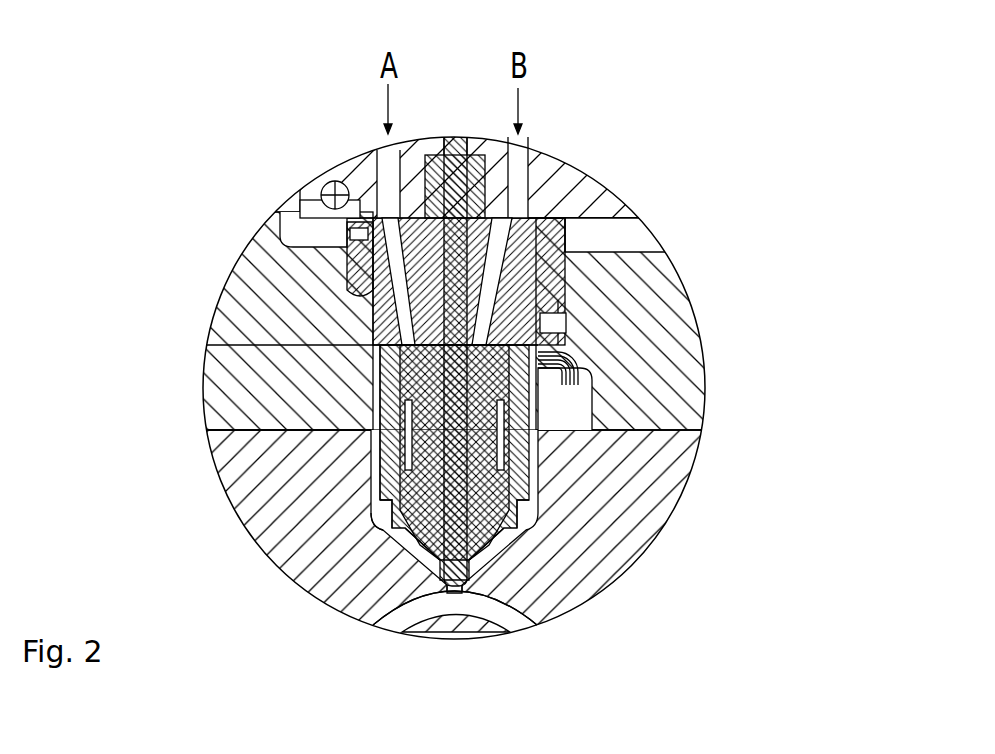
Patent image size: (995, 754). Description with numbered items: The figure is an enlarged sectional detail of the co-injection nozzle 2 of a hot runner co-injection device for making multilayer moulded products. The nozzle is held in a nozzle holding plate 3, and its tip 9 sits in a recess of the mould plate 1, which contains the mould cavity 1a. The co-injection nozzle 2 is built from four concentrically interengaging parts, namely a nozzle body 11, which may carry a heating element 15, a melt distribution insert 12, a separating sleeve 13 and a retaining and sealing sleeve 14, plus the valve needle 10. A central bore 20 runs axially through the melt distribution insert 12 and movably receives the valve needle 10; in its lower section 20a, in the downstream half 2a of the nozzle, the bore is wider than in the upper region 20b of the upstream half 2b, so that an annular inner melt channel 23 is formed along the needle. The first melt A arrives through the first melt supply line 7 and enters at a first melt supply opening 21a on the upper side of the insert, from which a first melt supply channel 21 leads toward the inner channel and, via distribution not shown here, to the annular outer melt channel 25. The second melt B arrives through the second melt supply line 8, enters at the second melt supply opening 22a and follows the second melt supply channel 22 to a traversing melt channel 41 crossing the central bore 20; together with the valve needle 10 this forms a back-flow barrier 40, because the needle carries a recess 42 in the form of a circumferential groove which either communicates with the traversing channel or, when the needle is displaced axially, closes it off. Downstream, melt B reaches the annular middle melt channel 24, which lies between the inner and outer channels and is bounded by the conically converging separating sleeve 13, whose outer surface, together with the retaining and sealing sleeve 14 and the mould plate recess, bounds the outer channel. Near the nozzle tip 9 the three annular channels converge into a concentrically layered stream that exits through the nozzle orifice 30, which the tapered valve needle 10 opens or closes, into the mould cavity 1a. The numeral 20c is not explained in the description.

The mould plate 1 is at (683, 457).
The mould cavity 1a is at (400, 625).
The co-injection nozzle 2 is at (345, 400).
The downstream half of the co-injection nozzle 2a is at (318, 470).
The upstream half of the co-injection nozzle 2b is at (330, 313).
The nozzle holding plate 3 is at (693, 400).
The first melt supply line 7 is at (375, 148).
The second melt supply line 8 is at (535, 150).
The tip of the co-injection nozzle 9 is at (420, 560).
The valve needle 10 is at (455, 137).
The nozzle body 11 is at (365, 272).
The melt distribution insert 12 is at (550, 180).
The separating sleeve 13 is at (472, 590).
The retaining and sealing sleeve 14 is at (400, 517).
The heating element 15 is at (572, 388).
The central bore 20 is at (525, 360).
The lower section of the central bore 20a is at (495, 395).
The upper region of the central bore 20b is at (393, 350).
The nozzle head 20c is at (470, 137).
The first melt supply channel 21 is at (355, 200).
The first melt supply opening 21a is at (337, 190).
The second melt supply channel 22 is at (570, 252).
The second melt supply opening 22a is at (545, 205).
The annular inner melt channel 23 is at (522, 512).
The annular middle melt channel 24 is at (495, 535).
The annular outer melt channel 25 is at (380, 530).
The nozzle orifice 30 is at (470, 625).
The back-flow barrier 40 is at (565, 267).
The traversing melt channel 41 is at (600, 318).
The recess of the valve needle 42 is at (370, 295).